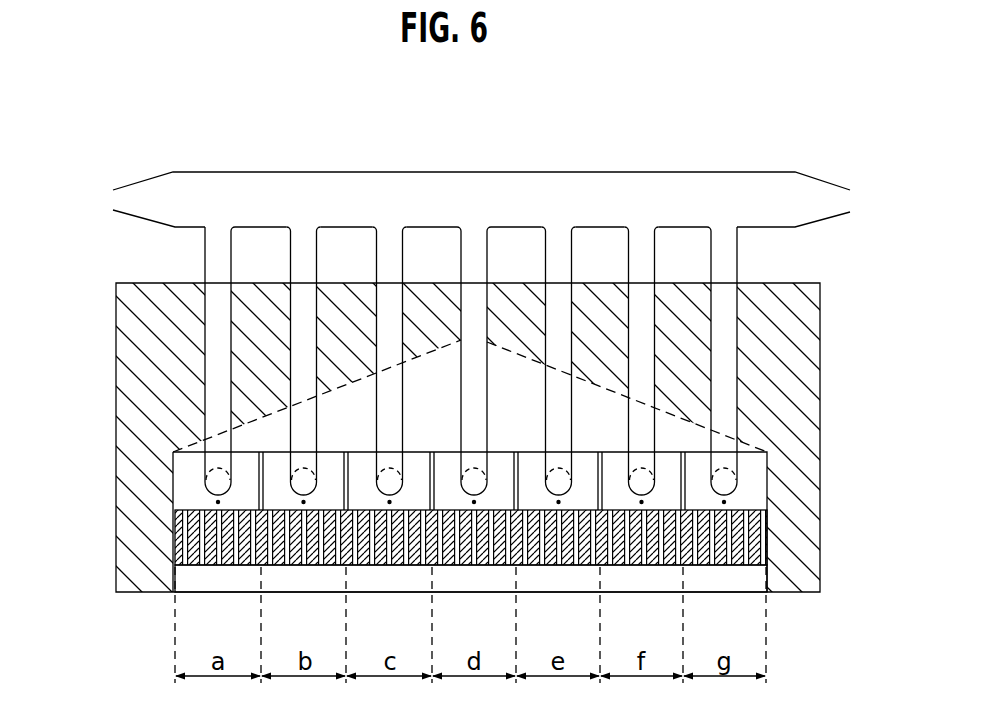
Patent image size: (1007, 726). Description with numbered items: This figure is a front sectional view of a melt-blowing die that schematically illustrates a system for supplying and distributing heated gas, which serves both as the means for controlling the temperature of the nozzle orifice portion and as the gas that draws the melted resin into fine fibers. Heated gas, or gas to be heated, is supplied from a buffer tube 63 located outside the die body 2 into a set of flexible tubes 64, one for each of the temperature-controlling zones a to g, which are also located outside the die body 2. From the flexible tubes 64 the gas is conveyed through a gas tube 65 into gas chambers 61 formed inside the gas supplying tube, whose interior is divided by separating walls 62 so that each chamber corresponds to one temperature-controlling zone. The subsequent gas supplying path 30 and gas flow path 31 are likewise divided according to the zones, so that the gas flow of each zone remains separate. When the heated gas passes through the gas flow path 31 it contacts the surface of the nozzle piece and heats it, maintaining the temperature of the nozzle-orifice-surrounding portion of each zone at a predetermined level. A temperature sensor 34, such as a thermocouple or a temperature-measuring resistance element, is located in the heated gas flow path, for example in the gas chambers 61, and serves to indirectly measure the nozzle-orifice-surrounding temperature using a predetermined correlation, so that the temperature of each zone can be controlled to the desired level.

The die body 2 is at (795, 353).
The gas supplying path 30 is at (175, 542).
The gas flow path 31 is at (203, 585).
The temperature sensor 34 is at (217, 503).
The gas chambers 61 is at (750, 482).
The separating walls 62 is at (258, 476).
The buffer tube 63 is at (727, 180).
The flexible tubes 64 is at (737, 257).
The gas tube 65 is at (210, 480).